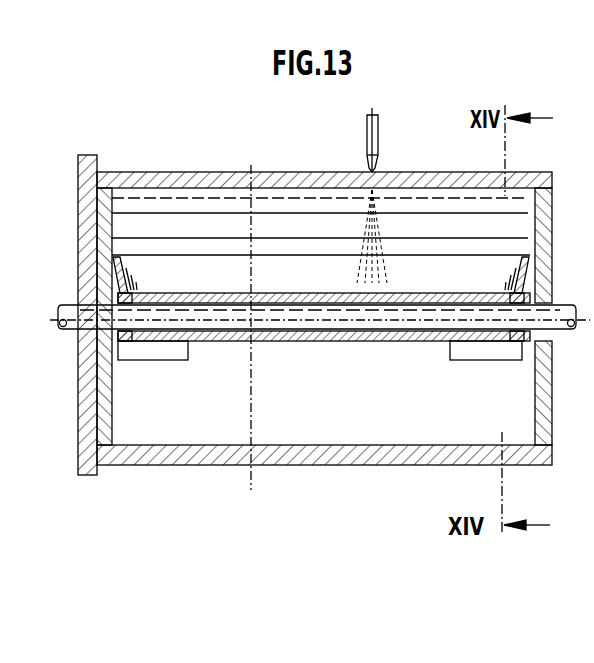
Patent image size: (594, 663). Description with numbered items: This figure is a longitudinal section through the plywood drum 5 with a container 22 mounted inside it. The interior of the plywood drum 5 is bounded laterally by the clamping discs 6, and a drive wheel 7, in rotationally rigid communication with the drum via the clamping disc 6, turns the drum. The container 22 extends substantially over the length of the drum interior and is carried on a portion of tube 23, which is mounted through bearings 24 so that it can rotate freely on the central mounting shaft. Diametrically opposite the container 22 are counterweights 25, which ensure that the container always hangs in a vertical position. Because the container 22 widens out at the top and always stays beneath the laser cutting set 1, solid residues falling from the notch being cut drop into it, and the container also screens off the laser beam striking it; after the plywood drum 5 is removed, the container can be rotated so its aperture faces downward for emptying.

The laser cutting set 1 is at (379, 135).
The plywood drum 5 is at (192, 181).
The clamping disc 6 is at (103, 226).
The drive wheel 7 is at (88, 198).
The container 22 is at (289, 270).
The portion of tube 23 is at (318, 342).
The bearings 24 is at (148, 298).
The counterweights 25 is at (163, 350).